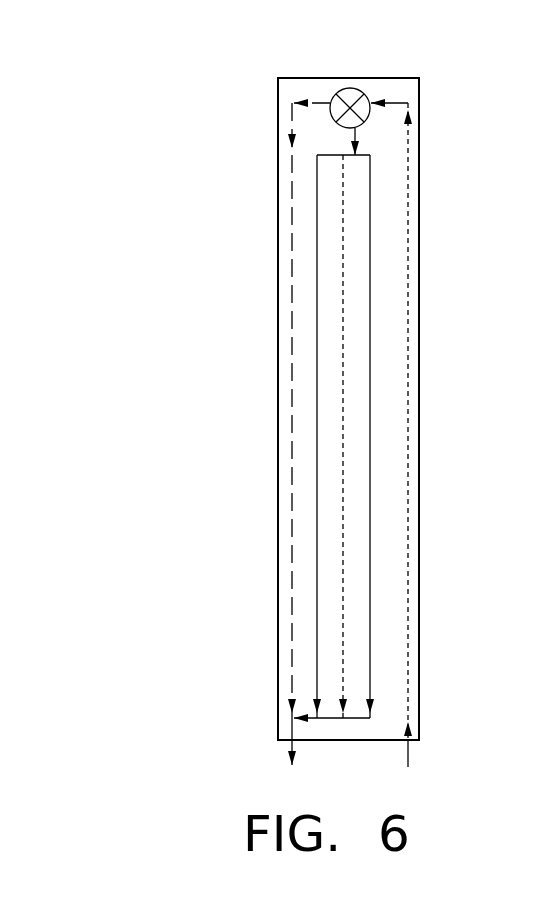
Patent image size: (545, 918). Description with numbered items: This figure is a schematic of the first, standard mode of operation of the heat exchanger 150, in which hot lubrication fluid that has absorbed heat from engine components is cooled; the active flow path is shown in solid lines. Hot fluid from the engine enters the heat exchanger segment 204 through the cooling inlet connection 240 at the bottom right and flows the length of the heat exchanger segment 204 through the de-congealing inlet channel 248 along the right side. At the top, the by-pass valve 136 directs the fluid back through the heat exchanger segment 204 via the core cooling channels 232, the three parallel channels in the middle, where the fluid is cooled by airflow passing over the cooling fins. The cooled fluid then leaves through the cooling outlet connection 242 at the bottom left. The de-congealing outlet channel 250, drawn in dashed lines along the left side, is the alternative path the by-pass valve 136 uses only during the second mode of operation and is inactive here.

The by-pass valve 136 is at (349, 98).
The heat exchanger 150 is at (192, 173).
The heat exchanger segment 204 is at (220, 287).
The core cooling channels 232 is at (317, 427).
The de-congealing inlet channel 248 is at (408, 500).
The de-congealing outlet channel 250 is at (290, 418).
The cooling outlet connection 242 is at (278, 738).
The cooling inlet connection 240 is at (420, 740).